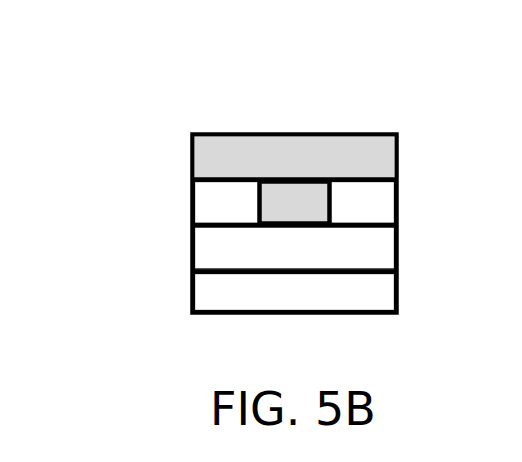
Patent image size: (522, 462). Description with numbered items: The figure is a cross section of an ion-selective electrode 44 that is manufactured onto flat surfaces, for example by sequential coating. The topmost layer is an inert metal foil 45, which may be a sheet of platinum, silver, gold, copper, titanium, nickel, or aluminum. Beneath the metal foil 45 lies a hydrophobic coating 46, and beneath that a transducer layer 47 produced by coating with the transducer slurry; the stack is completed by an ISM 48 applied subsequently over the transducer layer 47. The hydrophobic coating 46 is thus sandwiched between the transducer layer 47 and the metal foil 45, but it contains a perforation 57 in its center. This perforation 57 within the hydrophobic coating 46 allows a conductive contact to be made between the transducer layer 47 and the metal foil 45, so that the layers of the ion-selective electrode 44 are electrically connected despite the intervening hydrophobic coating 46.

The ion-selective electrode 44 is at (424, 100).
The inert metal foil 45 is at (286, 121).
The hydrophobic coating 46 is at (187, 197).
The transducer layer 47 is at (187, 257).
The ion-selective membrane (ISM) 48 is at (187, 307).
The perforation 57 is at (296, 206).